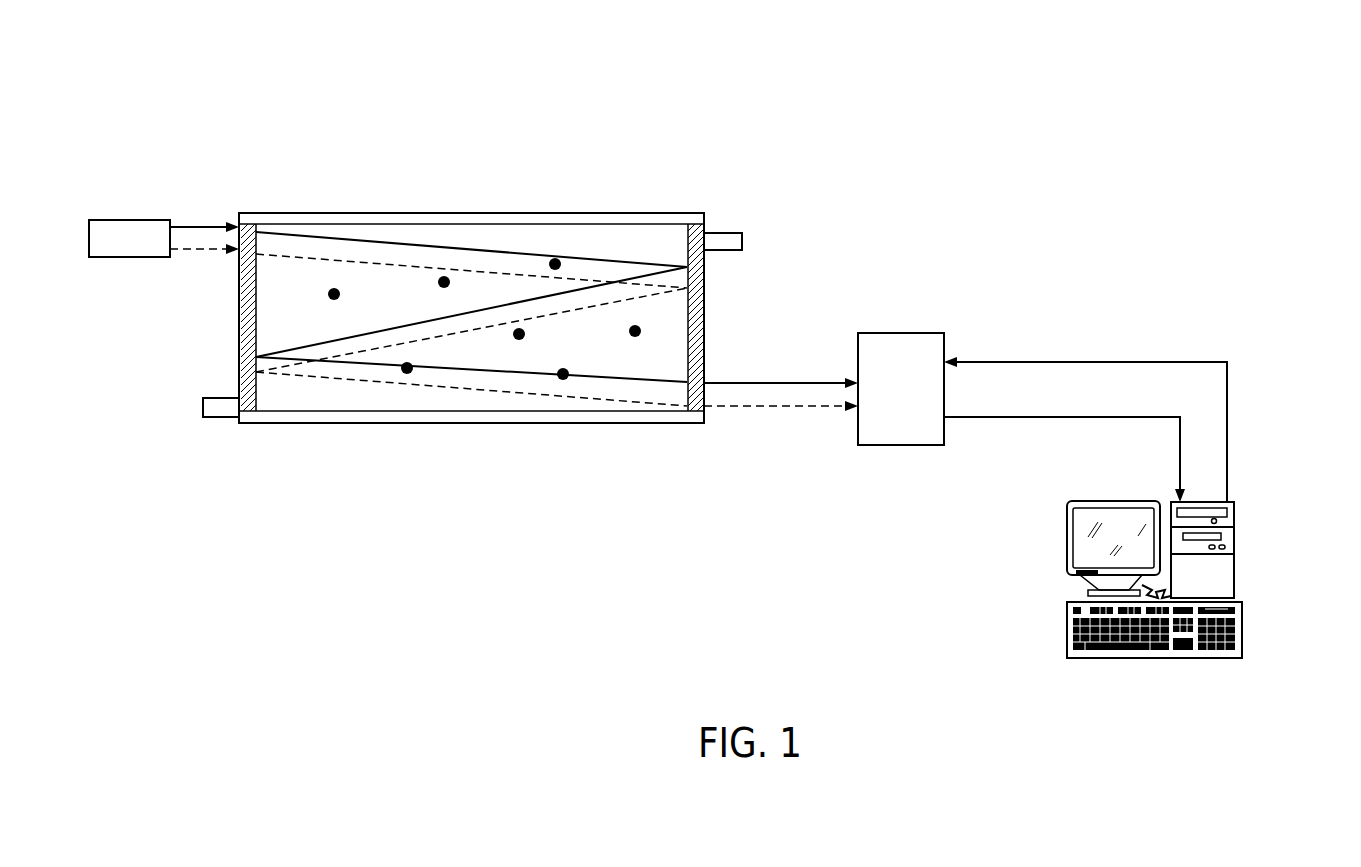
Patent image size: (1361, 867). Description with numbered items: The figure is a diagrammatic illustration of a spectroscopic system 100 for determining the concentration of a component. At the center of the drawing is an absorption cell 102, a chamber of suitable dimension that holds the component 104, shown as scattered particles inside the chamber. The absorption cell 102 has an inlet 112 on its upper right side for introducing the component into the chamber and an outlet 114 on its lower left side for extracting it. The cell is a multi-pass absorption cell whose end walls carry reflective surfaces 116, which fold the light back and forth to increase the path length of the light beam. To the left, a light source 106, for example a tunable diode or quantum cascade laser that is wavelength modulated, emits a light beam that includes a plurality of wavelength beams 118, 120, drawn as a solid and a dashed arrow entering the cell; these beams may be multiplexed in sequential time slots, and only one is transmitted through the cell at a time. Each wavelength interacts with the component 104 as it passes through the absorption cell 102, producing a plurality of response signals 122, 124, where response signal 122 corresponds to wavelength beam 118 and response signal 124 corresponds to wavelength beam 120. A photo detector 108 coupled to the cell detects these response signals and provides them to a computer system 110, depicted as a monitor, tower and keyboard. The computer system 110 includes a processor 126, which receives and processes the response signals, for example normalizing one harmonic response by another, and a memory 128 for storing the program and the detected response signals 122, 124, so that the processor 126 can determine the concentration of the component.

The system 100 is at (1183, 92).
The absorption cell 102 is at (470, 212).
The component 104 is at (562, 378).
The light source 106 is at (110, 260).
The photo detector 108 is at (900, 332).
The computer system 110 is at (1067, 538).
The inlet 112 is at (722, 232).
The outlet 114 is at (223, 420).
The reflective surfaces 116 is at (257, 403).
The wavelength beam 118 is at (190, 225).
The wavelength beam 120 is at (205, 253).
The response signal 122 is at (762, 382).
The response signal 124 is at (797, 408).
The processor 126 is at (1243, 628).
The memory 128 is at (1235, 570).